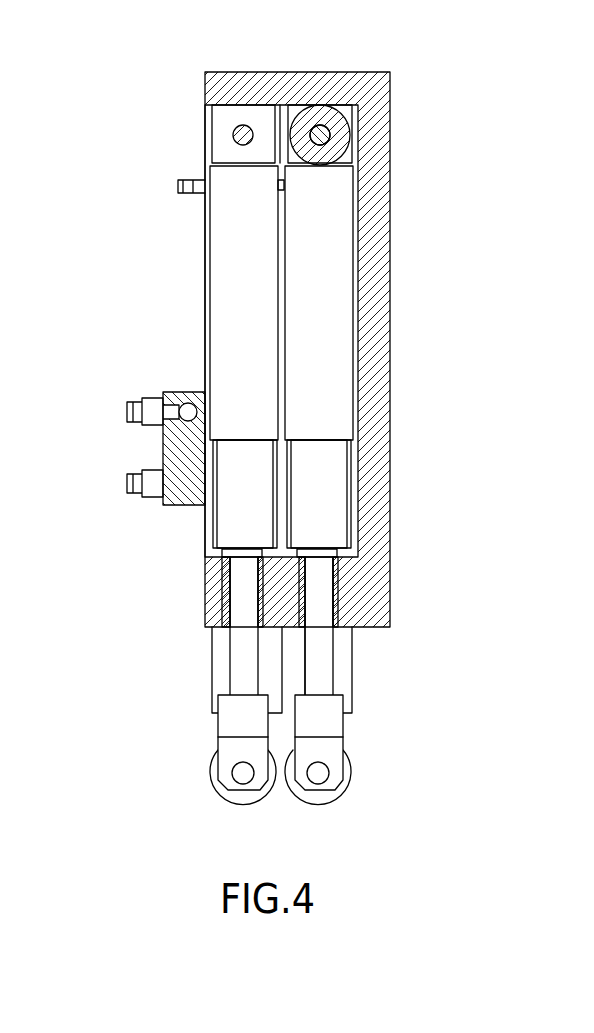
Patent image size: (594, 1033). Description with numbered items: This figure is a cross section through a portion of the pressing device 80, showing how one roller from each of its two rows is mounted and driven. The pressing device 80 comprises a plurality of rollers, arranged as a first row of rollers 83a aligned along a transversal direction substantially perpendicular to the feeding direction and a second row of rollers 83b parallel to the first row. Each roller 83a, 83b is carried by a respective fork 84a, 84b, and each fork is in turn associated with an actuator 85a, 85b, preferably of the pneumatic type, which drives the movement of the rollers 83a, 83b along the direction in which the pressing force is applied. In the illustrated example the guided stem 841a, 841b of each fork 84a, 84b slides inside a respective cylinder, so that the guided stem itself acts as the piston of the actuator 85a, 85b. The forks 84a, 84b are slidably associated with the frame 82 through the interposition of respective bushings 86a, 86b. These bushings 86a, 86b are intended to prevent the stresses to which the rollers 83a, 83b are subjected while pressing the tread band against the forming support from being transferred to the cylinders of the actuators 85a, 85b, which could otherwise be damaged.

The pressing device 80 is at (328, 435).
The frame 82 is at (391, 217).
The actuator 85a is at (242, 343).
The actuator 85b is at (322, 343).
The bushing 86a is at (212, 603).
The bushing 86b is at (352, 607).
The guided stem 841a is at (238, 650).
The guided stem 841b is at (330, 650).
The fork 84a is at (238, 715).
The fork 84b is at (343, 715).
The roller 83a is at (232, 799).
The roller 83b is at (336, 808).